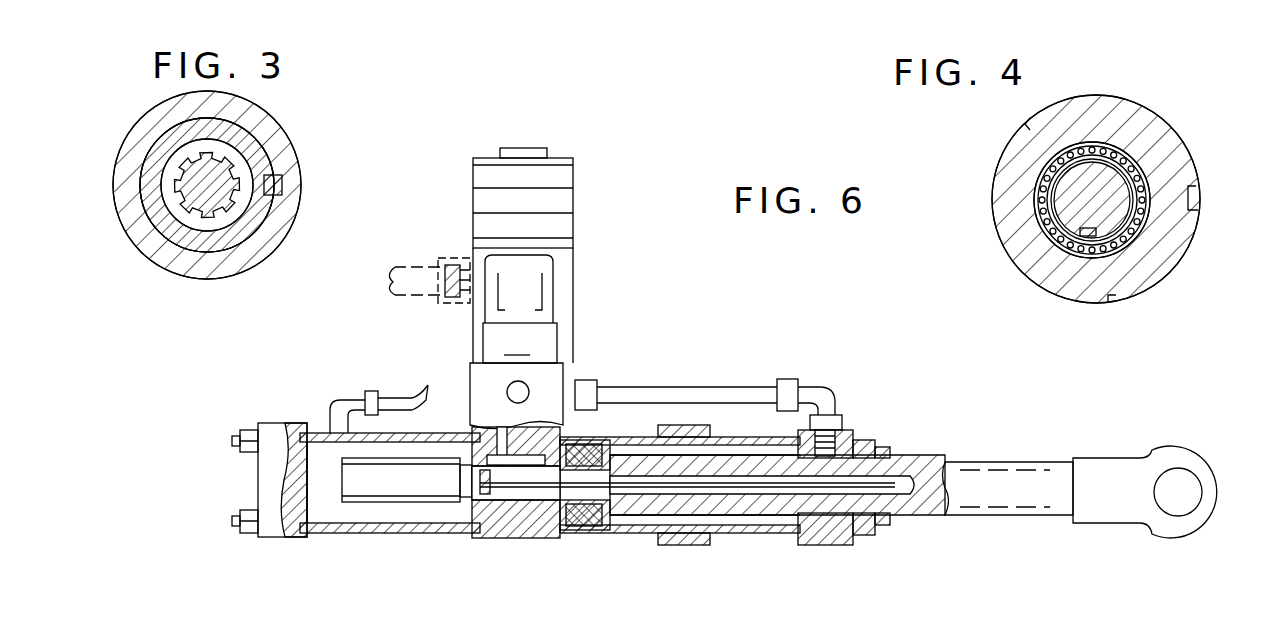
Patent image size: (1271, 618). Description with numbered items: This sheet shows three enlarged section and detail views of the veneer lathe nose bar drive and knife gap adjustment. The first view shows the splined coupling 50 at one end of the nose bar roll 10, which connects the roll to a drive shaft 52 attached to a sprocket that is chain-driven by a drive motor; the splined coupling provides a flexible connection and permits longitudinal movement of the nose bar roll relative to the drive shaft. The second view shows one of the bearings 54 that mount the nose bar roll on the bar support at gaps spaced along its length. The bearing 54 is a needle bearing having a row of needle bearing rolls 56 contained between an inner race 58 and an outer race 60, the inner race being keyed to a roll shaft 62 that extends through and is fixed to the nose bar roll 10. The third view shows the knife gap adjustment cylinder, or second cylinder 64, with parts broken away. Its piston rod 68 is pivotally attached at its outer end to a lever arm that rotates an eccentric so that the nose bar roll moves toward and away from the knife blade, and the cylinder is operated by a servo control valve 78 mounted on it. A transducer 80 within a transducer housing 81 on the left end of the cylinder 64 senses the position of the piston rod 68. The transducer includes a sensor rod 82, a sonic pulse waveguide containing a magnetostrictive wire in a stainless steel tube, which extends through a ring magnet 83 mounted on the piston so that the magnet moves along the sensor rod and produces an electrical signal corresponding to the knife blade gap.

In FIG. 3, the nose bar roll 10 is at (218, 265).
In FIG. 4, the nose bar roll 10 is at (1020, 262).
In FIG. 3, the splined coupling 50 is at (170, 190).
In FIG. 3, the drive shaft 52 is at (195, 210).
In FIG. 4, the bearing 54 is at (1010, 152).
In FIG. 4, the needle bearing rolls 56 is at (1035, 196).
In FIG. 4, the inner race 58 is at (1138, 195).
In FIG. 4, the outer race 60 is at (1145, 160).
In FIG. 4, the roll shaft 62 is at (1065, 210).
In FIG. 6, the second cylinder 64 is at (740, 535).
In FIG. 6, the piston rod 68 is at (988, 462).
In FIG. 6, the servo control valve 78 is at (481, 288).
In FIG. 6, the transducer 80 is at (398, 485).
In FIG. 6, the transducer housing 81 is at (432, 532).
In FIG. 6, the sensor rod 82 is at (650, 487).
In FIG. 6, the ring magnet 83 is at (553, 500).